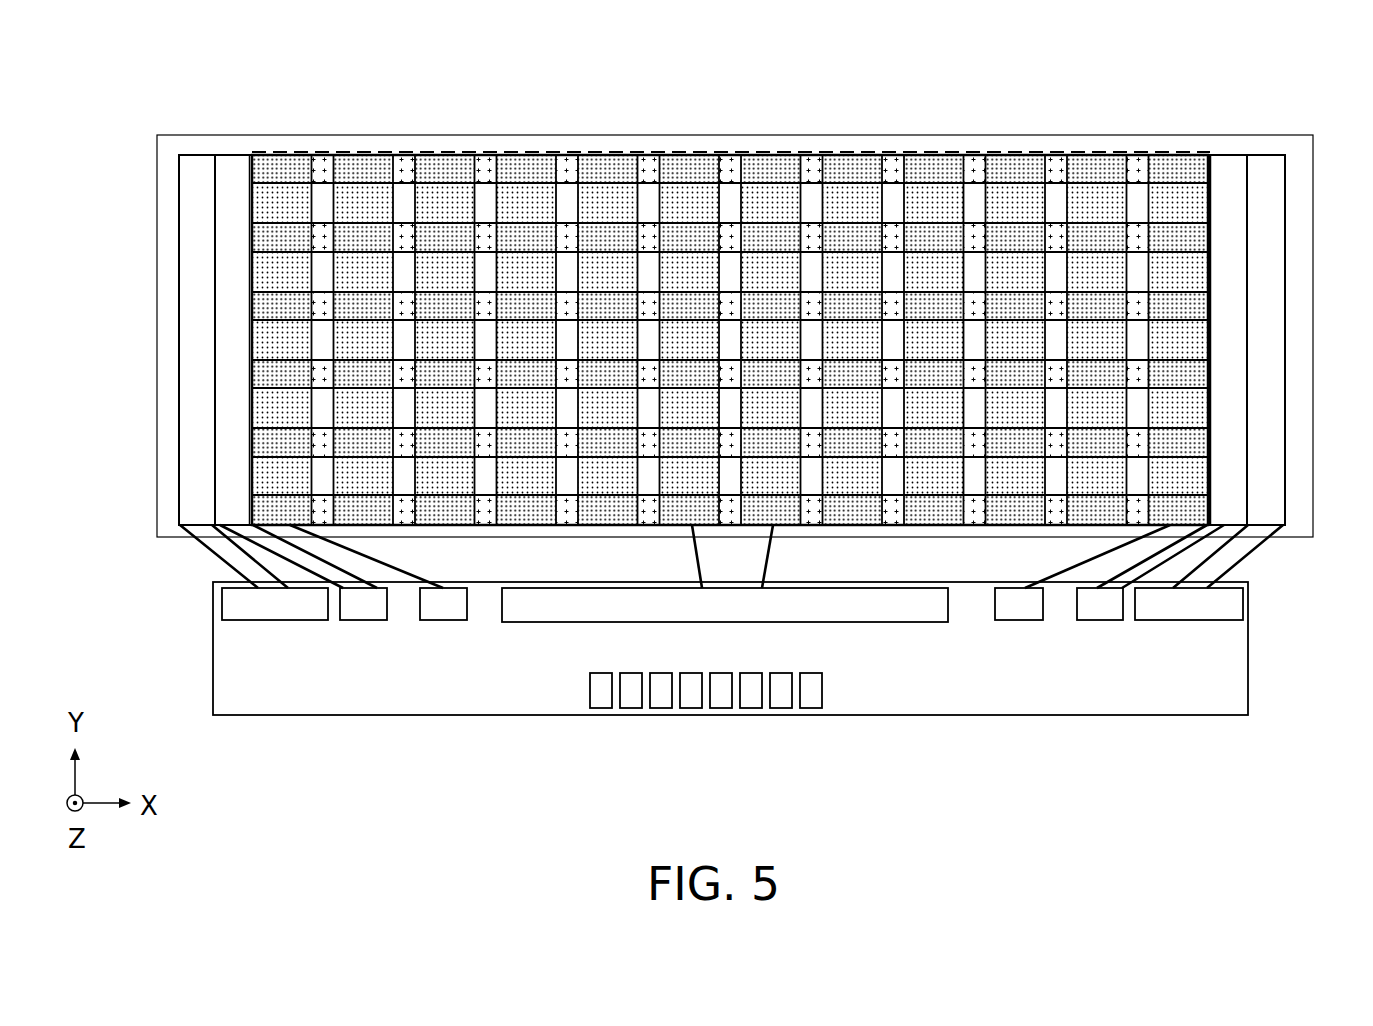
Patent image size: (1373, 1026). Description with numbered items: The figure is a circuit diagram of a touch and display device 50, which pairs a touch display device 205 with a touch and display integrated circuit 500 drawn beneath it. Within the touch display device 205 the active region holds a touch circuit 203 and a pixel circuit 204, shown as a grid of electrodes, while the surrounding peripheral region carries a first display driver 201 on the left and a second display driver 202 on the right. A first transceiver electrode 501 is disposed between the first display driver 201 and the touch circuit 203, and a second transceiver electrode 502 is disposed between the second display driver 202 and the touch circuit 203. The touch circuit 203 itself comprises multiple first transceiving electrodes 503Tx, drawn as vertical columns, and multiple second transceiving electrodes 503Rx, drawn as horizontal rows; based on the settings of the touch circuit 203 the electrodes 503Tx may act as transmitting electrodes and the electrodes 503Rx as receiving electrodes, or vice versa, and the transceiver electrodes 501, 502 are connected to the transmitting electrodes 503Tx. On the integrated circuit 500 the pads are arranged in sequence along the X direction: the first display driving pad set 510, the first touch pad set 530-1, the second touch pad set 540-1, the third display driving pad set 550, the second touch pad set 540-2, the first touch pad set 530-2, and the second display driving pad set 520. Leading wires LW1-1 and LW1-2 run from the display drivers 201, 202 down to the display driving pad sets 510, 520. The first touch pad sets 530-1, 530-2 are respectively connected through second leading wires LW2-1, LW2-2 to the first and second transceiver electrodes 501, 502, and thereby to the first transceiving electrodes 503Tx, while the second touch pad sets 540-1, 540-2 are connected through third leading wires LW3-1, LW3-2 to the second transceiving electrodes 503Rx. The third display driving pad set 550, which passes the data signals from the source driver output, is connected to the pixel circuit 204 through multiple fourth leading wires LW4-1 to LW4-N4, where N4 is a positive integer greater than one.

The touch and display device 50 is at (1347, 796).
The first display driver 201 is at (197, 165).
The second display driver 202 is at (1265, 165).
The touch circuit 203 is at (1042, 154).
The pixel circuit 204 is at (730, 294).
The touch display panel (TDP) 205 is at (157, 136).
The first transceiver electrode 501 is at (233, 165).
The second transceiver electrode 502 is at (1228, 165).
The first transceiving electrodes 503Tx is at (285, 200).
The second transceiving electrodes 503Rx is at (407, 170).
The circuit board 500 is at (213, 648).
The first display driving pad set 510 is at (275, 621).
The second display driving pad set 520 is at (1190, 621).
The first touch pad set 530-1 is at (378, 621).
The first touch pad set 530-2 is at (1085, 621).
The second touch pad set 540-1 is at (450, 621).
The second touch pad set 540-2 is at (1020, 621).
The third display driving pad set 550 is at (560, 622).
The first lead wires LW1-1 is at (232, 555).
The second lead wires LW1-2 is at (1232, 557).
The second leading wire LW2-1 is at (335, 574).
The second leading wire LW2-2 is at (1128, 577).
The third leading wire LW3-1 is at (395, 570).
The third leading wire LW3-2 is at (1069, 565).
The fourth leading wire LW4-1 is at (697, 557).
The fourth leading wire LW4-N4 is at (767, 558).